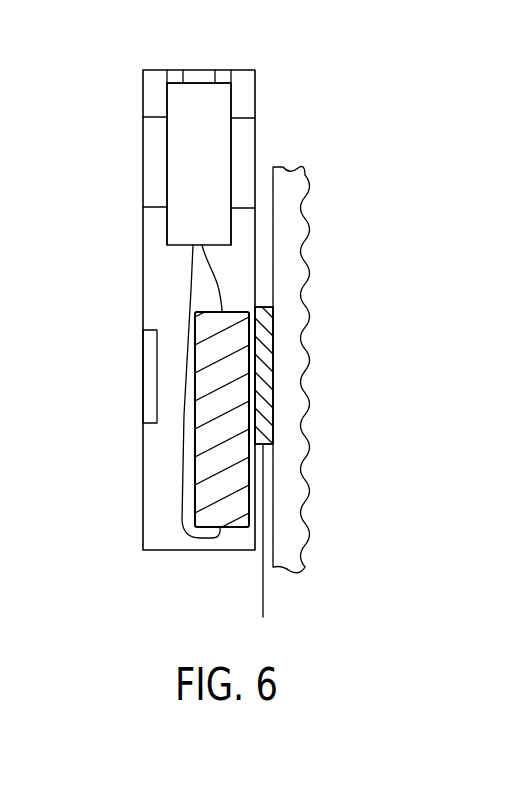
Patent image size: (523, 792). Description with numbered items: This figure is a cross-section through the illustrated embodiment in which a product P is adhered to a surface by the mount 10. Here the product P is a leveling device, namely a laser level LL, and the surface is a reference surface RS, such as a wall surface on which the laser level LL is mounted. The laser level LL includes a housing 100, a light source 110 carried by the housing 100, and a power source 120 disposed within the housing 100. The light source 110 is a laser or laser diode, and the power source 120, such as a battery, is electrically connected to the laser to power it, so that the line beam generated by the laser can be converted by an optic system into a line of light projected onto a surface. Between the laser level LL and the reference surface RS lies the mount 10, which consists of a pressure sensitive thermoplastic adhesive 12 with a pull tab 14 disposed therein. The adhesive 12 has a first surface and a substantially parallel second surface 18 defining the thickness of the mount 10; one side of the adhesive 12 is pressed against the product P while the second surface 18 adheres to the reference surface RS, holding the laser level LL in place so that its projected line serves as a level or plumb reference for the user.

The housing 100 is at (150, 86).
The light source 110 is at (221, 98).
The power source 120 is at (205, 465).
The laser level LL is at (153, 277).
The product P is at (123, 165).
The mount 10 is at (280, 327).
The reference surface RS is at (273, 195).
The pressure sensitive thermoplastic adhesive 12 is at (263, 388).
The second surface 18 is at (275, 360).
The pull tab 14 is at (263, 595).